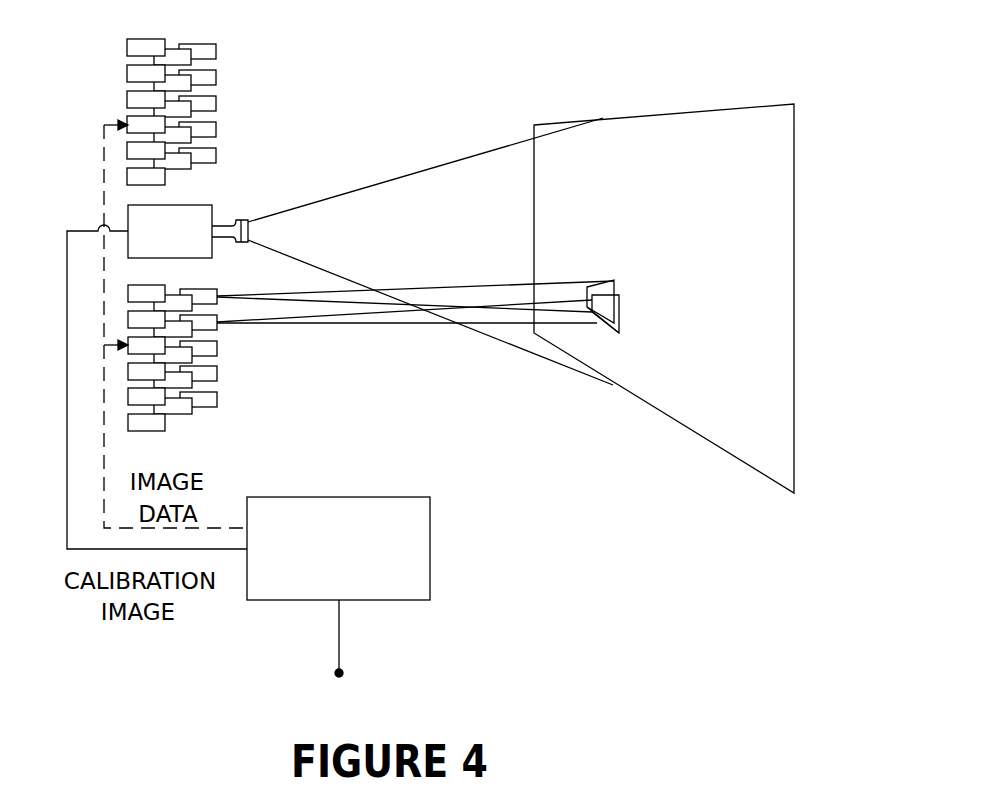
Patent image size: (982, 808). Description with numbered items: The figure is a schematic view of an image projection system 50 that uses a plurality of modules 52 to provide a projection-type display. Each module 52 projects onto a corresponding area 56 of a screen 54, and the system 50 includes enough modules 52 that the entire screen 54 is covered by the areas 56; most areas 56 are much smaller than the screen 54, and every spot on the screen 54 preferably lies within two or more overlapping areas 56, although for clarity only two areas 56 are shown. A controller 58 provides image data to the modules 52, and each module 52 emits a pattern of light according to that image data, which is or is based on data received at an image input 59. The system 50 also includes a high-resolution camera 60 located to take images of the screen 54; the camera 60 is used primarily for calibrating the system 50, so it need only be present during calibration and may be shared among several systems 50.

The image projection system 50 is at (762, 54).
The module 52 is at (127, 97).
The screen 54 is at (698, 127).
The area 56 is at (592, 312).
The controller 58 is at (430, 548).
The image input 59 is at (335, 673).
The camera 60 is at (212, 209).